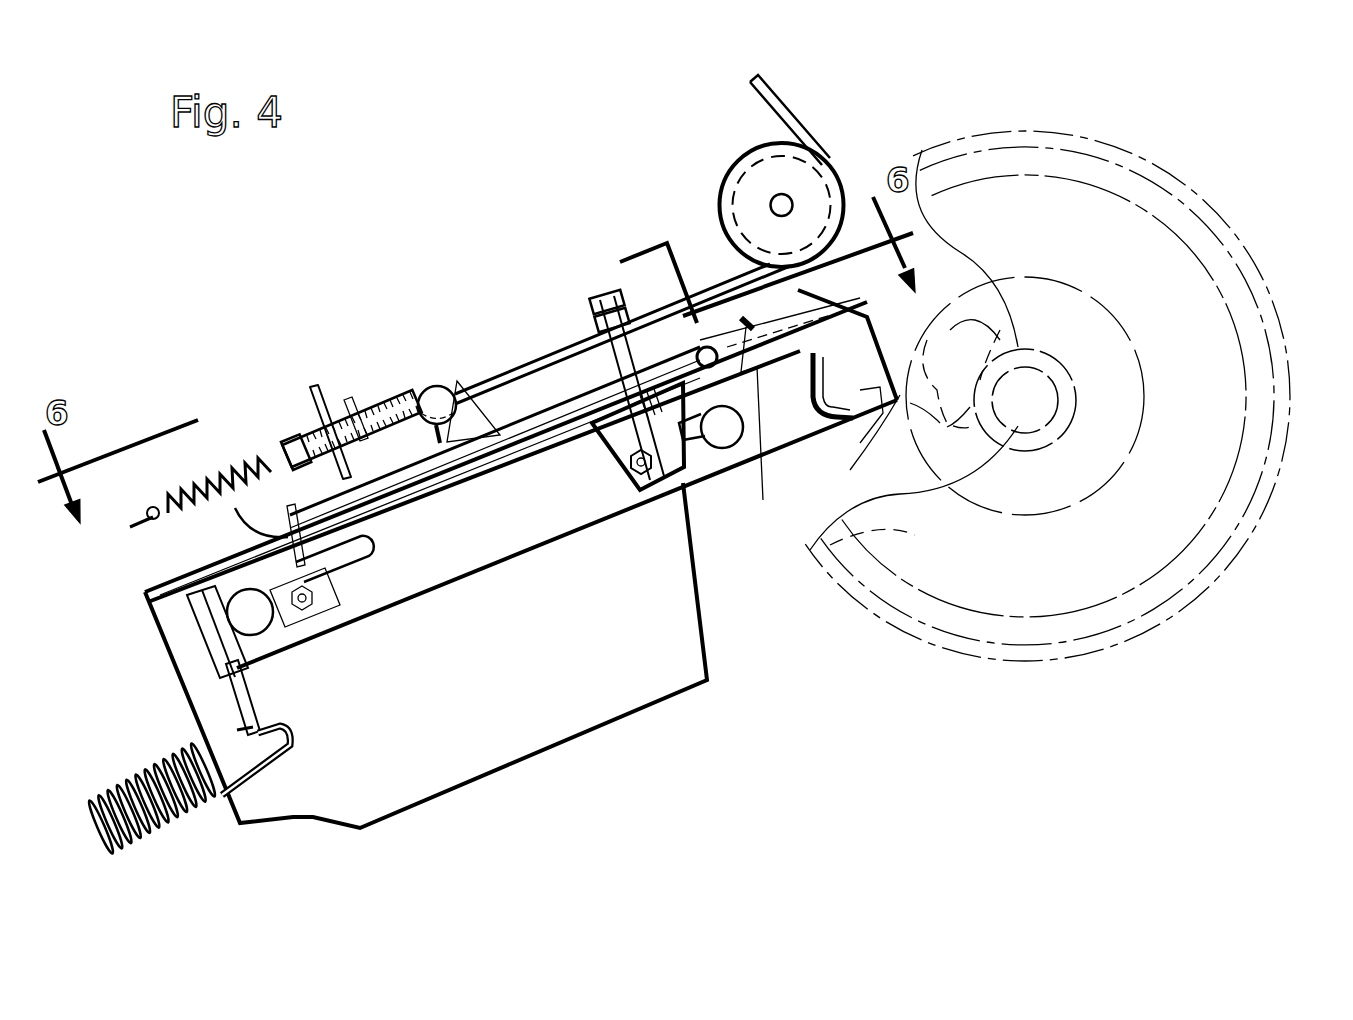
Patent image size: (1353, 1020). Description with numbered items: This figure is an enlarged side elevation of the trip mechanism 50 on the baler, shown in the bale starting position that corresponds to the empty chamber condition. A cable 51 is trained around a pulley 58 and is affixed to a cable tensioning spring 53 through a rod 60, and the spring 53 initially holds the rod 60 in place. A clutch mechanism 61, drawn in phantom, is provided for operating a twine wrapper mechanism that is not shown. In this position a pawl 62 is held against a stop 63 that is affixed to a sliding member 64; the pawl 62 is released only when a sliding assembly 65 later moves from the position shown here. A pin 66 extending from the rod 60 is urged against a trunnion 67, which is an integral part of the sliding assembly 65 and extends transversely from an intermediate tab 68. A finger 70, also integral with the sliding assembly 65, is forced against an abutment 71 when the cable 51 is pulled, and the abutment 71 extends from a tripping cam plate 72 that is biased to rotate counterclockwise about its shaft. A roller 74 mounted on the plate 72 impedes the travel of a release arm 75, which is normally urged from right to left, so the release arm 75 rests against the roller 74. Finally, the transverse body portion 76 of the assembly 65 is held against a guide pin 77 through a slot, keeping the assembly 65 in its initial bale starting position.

The trip mechanism 50 is at (385, 262).
The cable 51 is at (782, 105).
The cable tensioning spring 53 is at (205, 478).
The pulley 58 is at (720, 180).
The rod 60 is at (358, 398).
The clutch mechanism 61 is at (1235, 230).
The pawl 62 is at (862, 414).
The stop 63 is at (840, 433).
The sliding member 64 is at (413, 560).
The sliding assembly 65 is at (531, 400).
The pin 66 is at (310, 392).
The trunnion 67 is at (432, 400).
The intermediate tab 68 is at (442, 440).
The finger 70 is at (663, 327).
The abutment 71 is at (757, 457).
The tripping cam plate 72 is at (835, 250).
The roller 74 is at (762, 467).
The release arm 75 is at (863, 330).
The transverse body portion 76 is at (380, 388).
The guide pin 77 is at (620, 363).